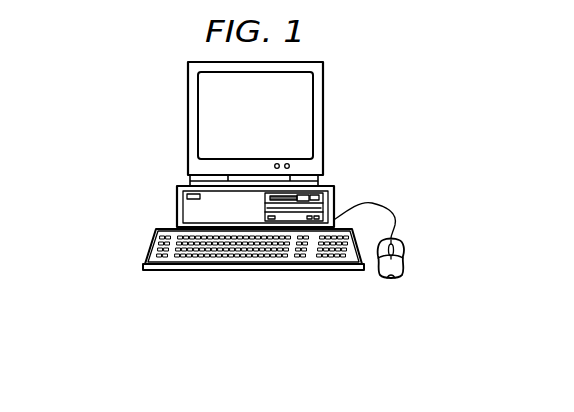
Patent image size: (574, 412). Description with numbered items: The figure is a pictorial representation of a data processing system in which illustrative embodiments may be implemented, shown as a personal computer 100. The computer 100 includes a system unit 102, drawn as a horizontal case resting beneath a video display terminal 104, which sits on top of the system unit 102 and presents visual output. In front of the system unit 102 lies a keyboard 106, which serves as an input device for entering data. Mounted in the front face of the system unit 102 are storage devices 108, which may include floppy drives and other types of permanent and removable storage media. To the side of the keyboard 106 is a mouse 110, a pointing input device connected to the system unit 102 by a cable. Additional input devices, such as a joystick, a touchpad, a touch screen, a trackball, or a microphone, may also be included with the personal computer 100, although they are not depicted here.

The computer 100 is at (138, 98).
The system unit 102 is at (177, 208).
The video display terminal 104 is at (324, 118).
The keyboard 106 is at (237, 270).
The storage devices 108 is at (305, 198).
The mouse 110 is at (403, 265).